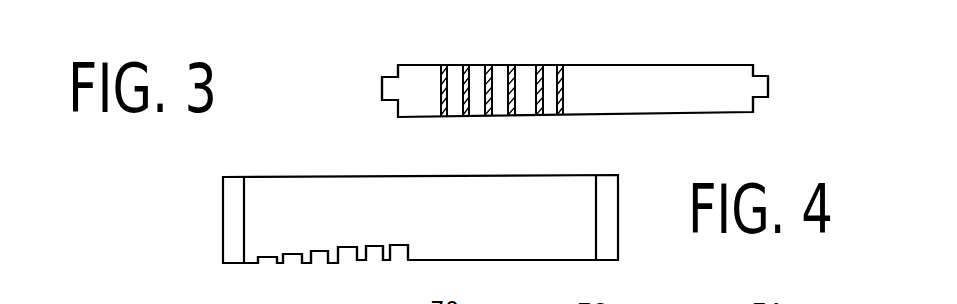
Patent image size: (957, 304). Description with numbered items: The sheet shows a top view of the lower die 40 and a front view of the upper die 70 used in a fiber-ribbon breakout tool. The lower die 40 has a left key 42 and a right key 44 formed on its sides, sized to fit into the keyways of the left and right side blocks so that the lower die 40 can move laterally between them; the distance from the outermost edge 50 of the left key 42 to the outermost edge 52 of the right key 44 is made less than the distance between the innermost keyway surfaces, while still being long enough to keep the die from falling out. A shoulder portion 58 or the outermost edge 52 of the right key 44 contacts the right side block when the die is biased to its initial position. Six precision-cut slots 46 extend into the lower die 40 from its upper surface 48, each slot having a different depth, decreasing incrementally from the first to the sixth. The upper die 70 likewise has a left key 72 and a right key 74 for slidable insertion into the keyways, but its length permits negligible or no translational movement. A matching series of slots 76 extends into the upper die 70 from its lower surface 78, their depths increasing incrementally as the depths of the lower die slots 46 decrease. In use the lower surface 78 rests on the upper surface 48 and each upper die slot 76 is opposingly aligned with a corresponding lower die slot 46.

In FIG. 3, the lower die 40 is at (568, 80).
In FIG. 3, the left key 42 is at (392, 72).
In FIG. 3, the right key 44 is at (763, 72).
In FIG. 3, the slots 46 is at (567, 118).
In FIG. 3, the upper surface 48 is at (640, 76).
In FIG. 3, the outermost edge 50 is at (382, 88).
In FIG. 3, the outermost edge 52 is at (768, 84).
In FIG. 3, the shoulder portion 58 is at (753, 107).
In FIG. 4, the upper die 70 is at (429, 212).
In FIG. 4, the left key 72 is at (223, 252).
In FIG. 4, the right key 74 is at (618, 196).
In FIG. 4, the slots 76 is at (367, 262).
In FIG. 4, the lower surface 78 is at (511, 262).